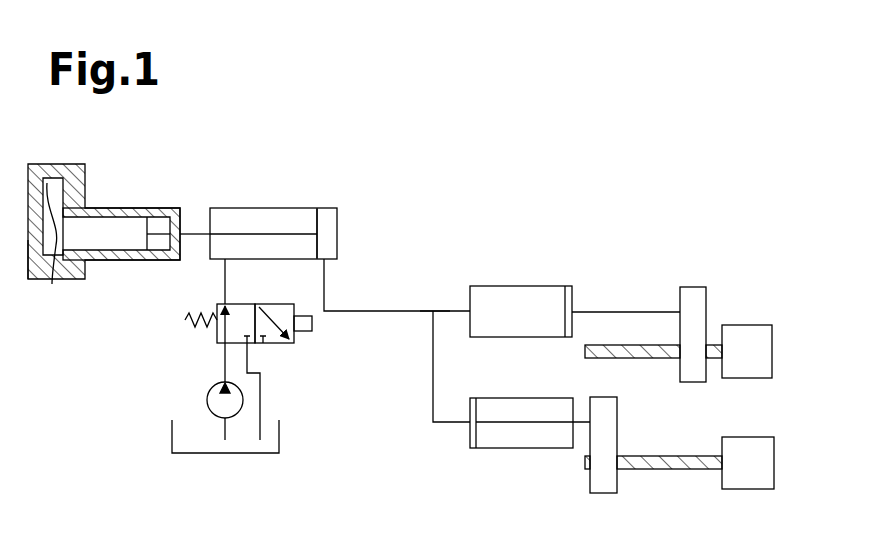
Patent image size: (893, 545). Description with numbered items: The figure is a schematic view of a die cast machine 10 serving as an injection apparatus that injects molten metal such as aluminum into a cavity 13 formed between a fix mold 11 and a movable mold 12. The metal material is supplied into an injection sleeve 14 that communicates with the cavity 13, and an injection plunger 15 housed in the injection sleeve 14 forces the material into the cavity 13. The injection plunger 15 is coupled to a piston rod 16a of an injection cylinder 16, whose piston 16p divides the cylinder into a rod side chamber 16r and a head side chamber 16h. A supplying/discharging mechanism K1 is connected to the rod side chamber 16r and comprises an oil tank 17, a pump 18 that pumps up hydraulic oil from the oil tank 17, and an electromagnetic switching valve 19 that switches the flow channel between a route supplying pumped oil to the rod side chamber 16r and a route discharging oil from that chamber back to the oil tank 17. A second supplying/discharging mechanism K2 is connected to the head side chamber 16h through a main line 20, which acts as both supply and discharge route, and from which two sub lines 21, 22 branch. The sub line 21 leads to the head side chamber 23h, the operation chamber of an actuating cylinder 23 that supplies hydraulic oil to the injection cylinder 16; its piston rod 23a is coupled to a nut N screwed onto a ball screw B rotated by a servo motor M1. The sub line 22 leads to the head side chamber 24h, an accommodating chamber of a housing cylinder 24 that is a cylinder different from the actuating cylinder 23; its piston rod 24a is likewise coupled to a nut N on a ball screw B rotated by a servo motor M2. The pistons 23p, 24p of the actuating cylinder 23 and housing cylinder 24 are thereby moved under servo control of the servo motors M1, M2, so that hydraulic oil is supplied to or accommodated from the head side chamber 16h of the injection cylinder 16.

The die cast machine 10 is at (447, 233).
The fix mold 11 is at (86, 197).
The movable mold 12 is at (28, 270).
The cavity 13 is at (52, 284).
The injection sleeve 14 is at (140, 208).
The injection plunger 15 is at (145, 228).
The injection cylinder 16 is at (270, 206).
The piston rod 16a is at (200, 232).
The rod side chamber 16r is at (245, 218).
The head side chamber 16h is at (328, 212).
The piston 16p is at (338, 247).
The oil tank 17 is at (172, 435).
The pump 18 is at (207, 397).
The electromagnetic switching valve 19 is at (283, 303).
The main line 20 is at (375, 313).
The sub line 21 is at (445, 309).
The sub line 22 is at (433, 393).
The actuating cylinder 23 is at (520, 285).
The head side chamber 23h is at (490, 296).
The piston 23p is at (565, 326).
The piston rod 23a is at (622, 311).
The housing cylinder 24 is at (505, 449).
The piston 24p is at (476, 410).
The head side chamber 24h is at (470, 430).
The piston rod 24a is at (555, 423).
The supplying/discharging mechanism K1 is at (158, 352).
The supplying/discharging mechanism K2 is at (578, 268).
The nut N is at (698, 286).
The ball screw B is at (610, 347).
The servo motor M1 is at (745, 324).
The servo motor M2 is at (745, 436).